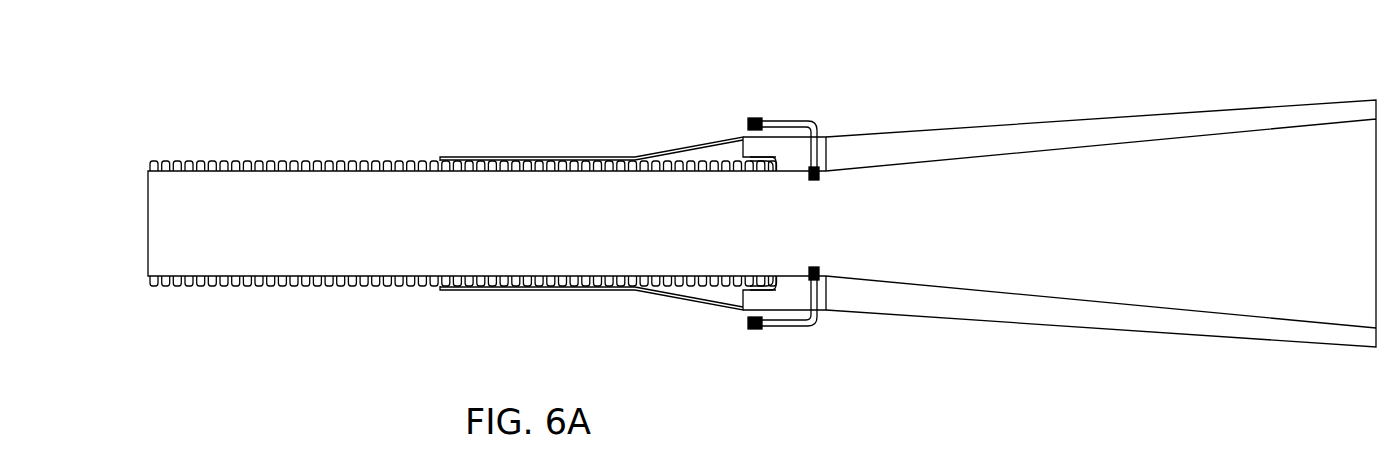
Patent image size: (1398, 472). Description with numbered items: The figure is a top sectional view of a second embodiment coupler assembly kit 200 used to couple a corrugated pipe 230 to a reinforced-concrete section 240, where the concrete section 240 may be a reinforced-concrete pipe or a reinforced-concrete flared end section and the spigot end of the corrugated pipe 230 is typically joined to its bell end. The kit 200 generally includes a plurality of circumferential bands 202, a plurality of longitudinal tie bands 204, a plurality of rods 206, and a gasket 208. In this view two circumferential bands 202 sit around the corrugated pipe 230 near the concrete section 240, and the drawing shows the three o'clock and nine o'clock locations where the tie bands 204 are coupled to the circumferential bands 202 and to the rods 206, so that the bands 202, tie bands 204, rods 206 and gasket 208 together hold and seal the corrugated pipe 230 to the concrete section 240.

The coupler assembly kit 200 is at (306, 40).
The circumferential bands 202 is at (449, 164).
The longitudinal tie bands 204 is at (692, 146).
The rods 206 is at (787, 121).
The gasket 208 is at (777, 167).
The corrugated pipe 230 is at (230, 160).
The reinforced-concrete section 240 is at (1163, 332).